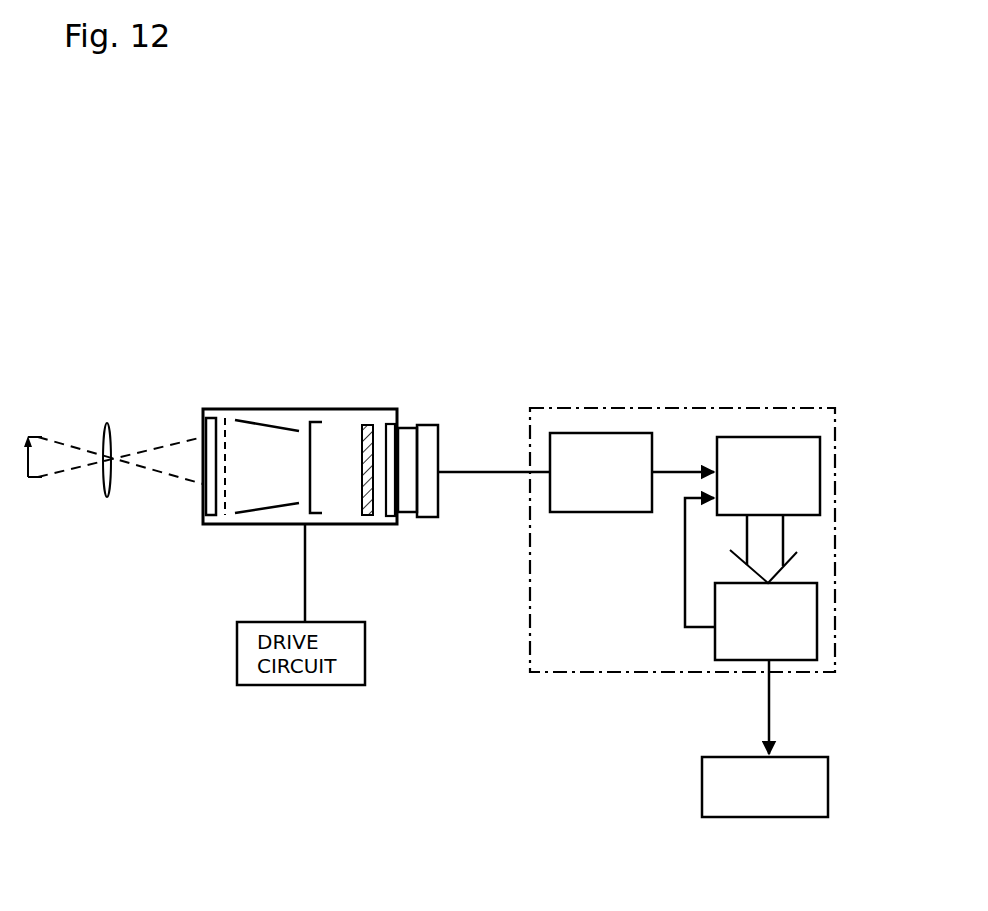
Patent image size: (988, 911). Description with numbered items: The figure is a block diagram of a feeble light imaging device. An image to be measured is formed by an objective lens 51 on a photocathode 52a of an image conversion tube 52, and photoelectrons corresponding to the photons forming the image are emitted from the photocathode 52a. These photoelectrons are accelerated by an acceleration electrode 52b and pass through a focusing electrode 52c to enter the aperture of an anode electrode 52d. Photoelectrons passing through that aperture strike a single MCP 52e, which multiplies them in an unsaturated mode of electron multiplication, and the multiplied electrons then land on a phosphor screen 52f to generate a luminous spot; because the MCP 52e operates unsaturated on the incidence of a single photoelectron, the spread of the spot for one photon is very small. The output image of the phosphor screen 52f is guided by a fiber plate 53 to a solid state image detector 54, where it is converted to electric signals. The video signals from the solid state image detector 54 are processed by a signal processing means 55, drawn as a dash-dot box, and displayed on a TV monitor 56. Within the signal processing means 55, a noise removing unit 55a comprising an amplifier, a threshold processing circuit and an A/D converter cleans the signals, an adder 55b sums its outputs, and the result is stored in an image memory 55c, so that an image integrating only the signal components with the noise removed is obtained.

The objective lens 51 is at (109, 428).
The image conversion tube 52 is at (303, 408).
The photocathode 52a is at (208, 410).
The acceleration electrode 52b is at (237, 420).
The focusing electrode 52c is at (236, 522).
The anode electrode 52d is at (318, 522).
The MCP 52e is at (370, 410).
The phosphor screen 52f is at (392, 428).
The fiber plate 53 is at (406, 516).
The solid state image detector 54 is at (430, 522).
The signal processing means 55 is at (680, 408).
The noise removing unit 55a is at (580, 432).
The adder 55b is at (750, 437).
The image memory 55c is at (818, 608).
The TV monitor 56 is at (758, 818).